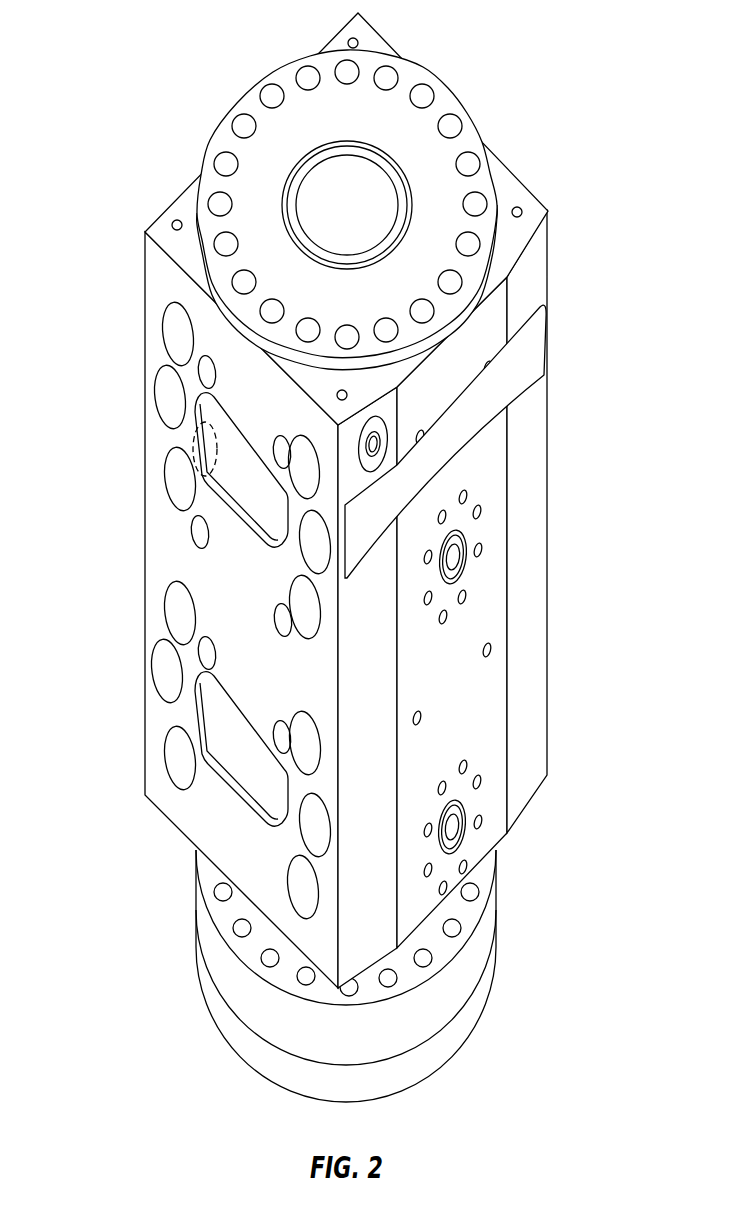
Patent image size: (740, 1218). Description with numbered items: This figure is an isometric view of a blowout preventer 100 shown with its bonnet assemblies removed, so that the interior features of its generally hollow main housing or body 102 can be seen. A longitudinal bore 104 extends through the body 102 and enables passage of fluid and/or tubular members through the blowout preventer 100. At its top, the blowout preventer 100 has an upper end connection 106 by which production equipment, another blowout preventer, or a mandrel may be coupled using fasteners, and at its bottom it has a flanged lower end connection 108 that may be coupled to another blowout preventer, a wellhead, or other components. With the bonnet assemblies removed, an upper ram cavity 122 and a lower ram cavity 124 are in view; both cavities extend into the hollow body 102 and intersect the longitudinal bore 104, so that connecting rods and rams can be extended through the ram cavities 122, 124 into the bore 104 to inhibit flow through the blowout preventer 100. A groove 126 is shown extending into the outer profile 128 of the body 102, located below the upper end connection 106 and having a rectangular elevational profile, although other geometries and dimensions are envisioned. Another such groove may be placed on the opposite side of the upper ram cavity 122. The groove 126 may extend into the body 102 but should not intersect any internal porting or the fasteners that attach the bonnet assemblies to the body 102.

The blowout preventer 100 is at (125, 119).
The main housing or body 102 is at (500, 745).
The bore 104 is at (347, 178).
The upper end connection 106 is at (293, 105).
The flanged lower end connection 108 is at (460, 977).
The upper ram cavity 122 is at (210, 447).
The lower ram cavity 124 is at (210, 729).
The groove 126 is at (522, 363).
The outer profile 128 is at (522, 577).